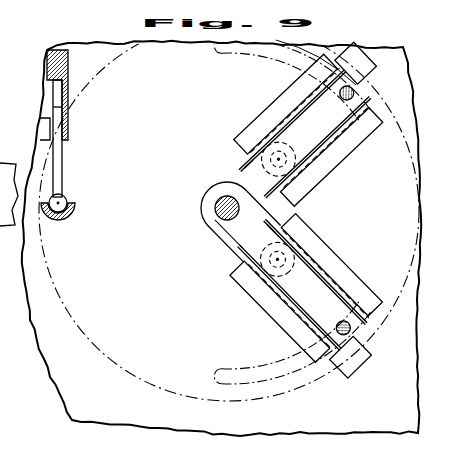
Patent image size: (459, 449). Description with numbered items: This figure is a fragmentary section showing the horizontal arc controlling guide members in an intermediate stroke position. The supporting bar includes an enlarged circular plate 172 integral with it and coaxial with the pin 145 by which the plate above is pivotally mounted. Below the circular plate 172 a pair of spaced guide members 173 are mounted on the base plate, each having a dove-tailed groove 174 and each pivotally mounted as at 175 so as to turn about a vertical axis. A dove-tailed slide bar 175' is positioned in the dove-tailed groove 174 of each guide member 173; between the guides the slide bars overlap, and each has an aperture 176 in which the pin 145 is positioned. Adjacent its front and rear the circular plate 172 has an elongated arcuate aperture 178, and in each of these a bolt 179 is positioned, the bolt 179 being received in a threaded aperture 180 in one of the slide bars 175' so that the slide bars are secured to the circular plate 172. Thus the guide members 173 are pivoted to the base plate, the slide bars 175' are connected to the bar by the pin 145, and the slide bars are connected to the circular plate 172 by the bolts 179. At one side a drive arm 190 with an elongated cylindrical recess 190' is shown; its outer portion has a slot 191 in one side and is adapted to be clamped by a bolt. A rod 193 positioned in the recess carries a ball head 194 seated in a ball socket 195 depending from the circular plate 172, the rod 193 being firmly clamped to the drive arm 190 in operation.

The pin 145 is at (218, 203).
The circular plate 172 is at (259, 400).
The guide member 173 is at (272, 107).
The dove-tailed groove 174 is at (336, 141).
The pivot 175 is at (284, 205).
The dove-tailed slide bar 175' is at (240, 208).
The aperture 176 is at (217, 222).
The elongated arcuate aperture 178 is at (262, 54).
The bolt 179 is at (339, 96).
The threaded aperture 180 is at (354, 90).
The drive arm 190 is at (71, 95).
The elongated cylindrical recess 190' is at (80, 99).
The slot 191 is at (48, 130).
The rod 193 is at (62, 160).
The ball head 194 is at (66, 203).
The ball socket 195 is at (64, 221).